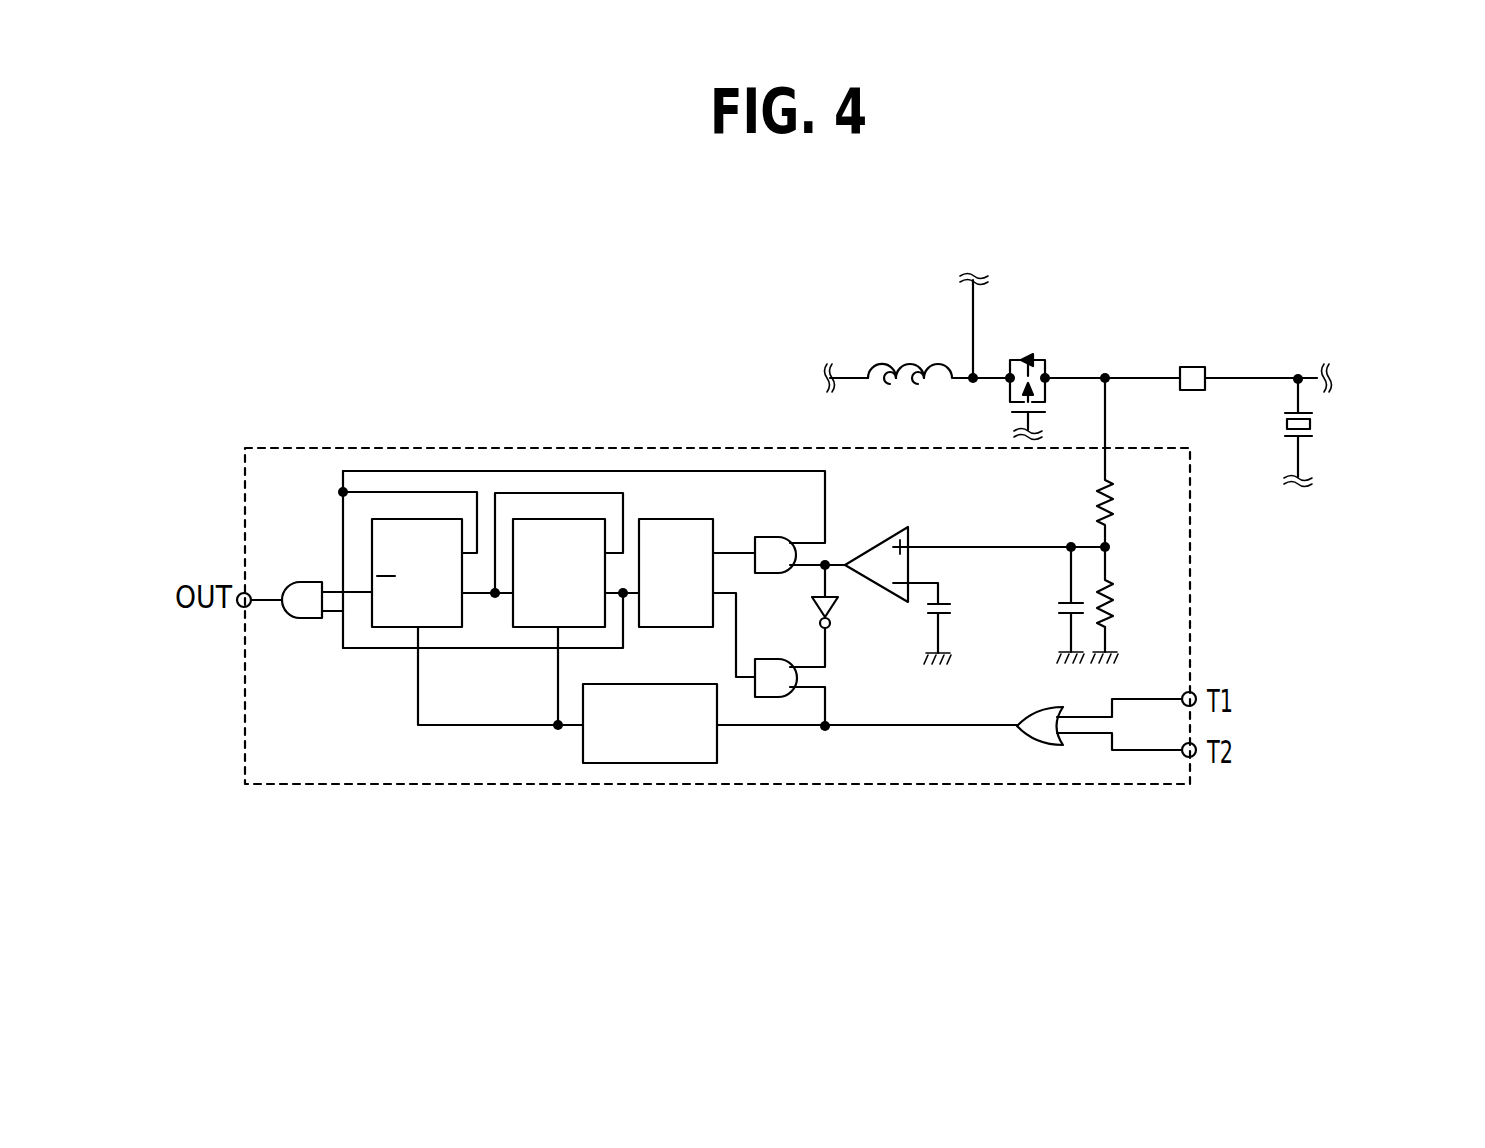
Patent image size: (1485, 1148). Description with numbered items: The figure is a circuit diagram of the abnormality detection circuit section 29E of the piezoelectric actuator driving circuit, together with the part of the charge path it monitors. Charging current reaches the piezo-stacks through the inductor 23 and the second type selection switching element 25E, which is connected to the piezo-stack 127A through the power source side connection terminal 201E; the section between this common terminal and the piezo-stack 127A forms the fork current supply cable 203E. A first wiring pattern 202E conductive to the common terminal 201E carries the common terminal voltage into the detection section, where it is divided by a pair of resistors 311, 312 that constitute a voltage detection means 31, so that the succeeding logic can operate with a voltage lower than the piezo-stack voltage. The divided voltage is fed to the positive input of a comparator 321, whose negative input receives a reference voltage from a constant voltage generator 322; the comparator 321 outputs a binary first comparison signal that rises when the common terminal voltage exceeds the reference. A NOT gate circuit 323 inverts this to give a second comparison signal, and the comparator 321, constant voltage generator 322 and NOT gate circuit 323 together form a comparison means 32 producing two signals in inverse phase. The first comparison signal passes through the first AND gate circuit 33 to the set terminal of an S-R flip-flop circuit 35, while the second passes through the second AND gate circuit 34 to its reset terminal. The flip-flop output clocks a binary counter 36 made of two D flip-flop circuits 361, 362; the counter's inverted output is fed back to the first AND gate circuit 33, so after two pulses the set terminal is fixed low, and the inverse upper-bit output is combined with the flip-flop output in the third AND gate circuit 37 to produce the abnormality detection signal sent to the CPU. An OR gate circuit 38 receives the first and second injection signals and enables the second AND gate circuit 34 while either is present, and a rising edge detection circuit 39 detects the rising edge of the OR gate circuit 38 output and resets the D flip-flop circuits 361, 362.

The inductor 23 is at (913, 362).
The second type selection switching element 25E is at (1032, 357).
The first wiring pattern 202E is at (1105, 420).
The power source side connection terminal 201E is at (1195, 367).
The current supply cable 203E is at (1287, 377).
The piezo-stack 127A is at (1312, 427).
The abnormality detection circuit section 29E is at (287, 448).
The binary counter 36 is at (488, 446).
The D flip-flop circuit 362 is at (420, 519).
The D flip-flop circuit 361 is at (560, 519).
The S-R flip-flop circuit 35 is at (678, 519).
The first AND gate circuit 33 is at (782, 537).
The third AND gate circuit 37 is at (297, 620).
The second AND gate circuit 34 is at (782, 697).
The rising edge detection circuit 39 is at (620, 763).
The comparison means 32 is at (937, 746).
The NOT gate circuit 323 is at (829, 608).
The comparator 321 is at (882, 588).
The constant voltage generator 322 is at (947, 615).
The OR gate circuit 38 is at (1043, 745).
The voltage detection means 31 is at (1233, 528).
The resistor 311 is at (1107, 508).
The resistor 312 is at (1110, 612).